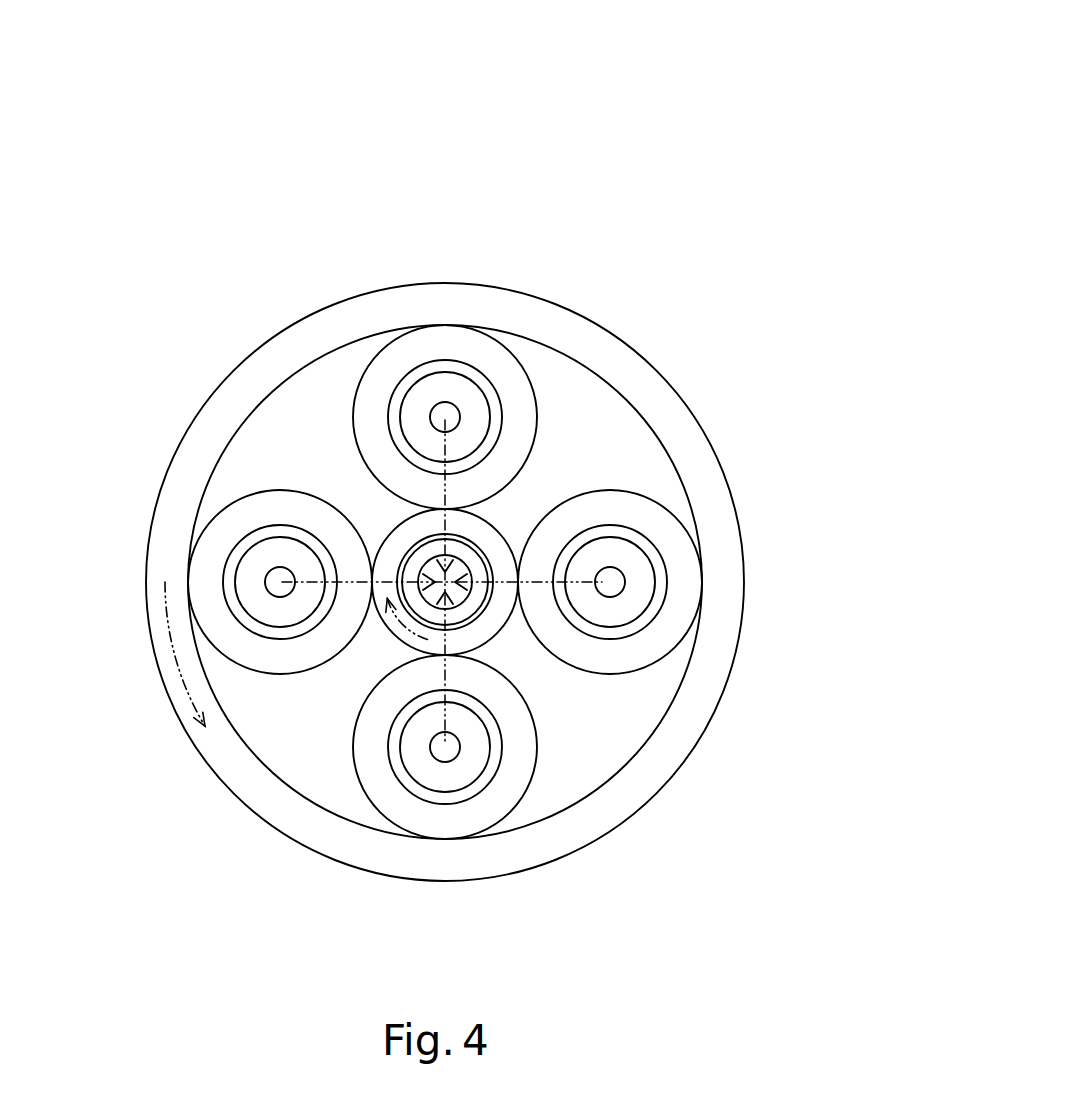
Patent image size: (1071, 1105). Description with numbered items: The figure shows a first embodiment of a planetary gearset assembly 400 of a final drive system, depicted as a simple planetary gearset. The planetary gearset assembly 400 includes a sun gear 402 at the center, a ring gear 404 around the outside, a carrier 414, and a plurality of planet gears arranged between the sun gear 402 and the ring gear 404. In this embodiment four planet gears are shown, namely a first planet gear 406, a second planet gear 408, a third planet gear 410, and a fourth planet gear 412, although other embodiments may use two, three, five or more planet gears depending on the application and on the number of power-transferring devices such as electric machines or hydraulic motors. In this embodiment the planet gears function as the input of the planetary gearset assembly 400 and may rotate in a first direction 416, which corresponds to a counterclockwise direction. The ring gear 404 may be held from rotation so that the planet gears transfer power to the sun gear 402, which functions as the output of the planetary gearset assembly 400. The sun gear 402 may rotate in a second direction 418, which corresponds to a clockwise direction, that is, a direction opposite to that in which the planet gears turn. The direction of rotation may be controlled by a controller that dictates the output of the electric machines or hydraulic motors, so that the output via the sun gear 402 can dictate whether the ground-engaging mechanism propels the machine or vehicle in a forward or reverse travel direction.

The planetary gearset assembly 400 is at (647, 133).
The sun gear 402 is at (480, 533).
The ring gear 404 is at (521, 315).
The first planet gear 406 is at (430, 388).
The second planet gear 408 is at (643, 585).
The third planet gear 410 is at (447, 777).
The fourth planet gear 412 is at (247, 570).
The carrier 414 is at (610, 743).
The first direction 416 is at (173, 670).
The second direction 418 is at (402, 624).